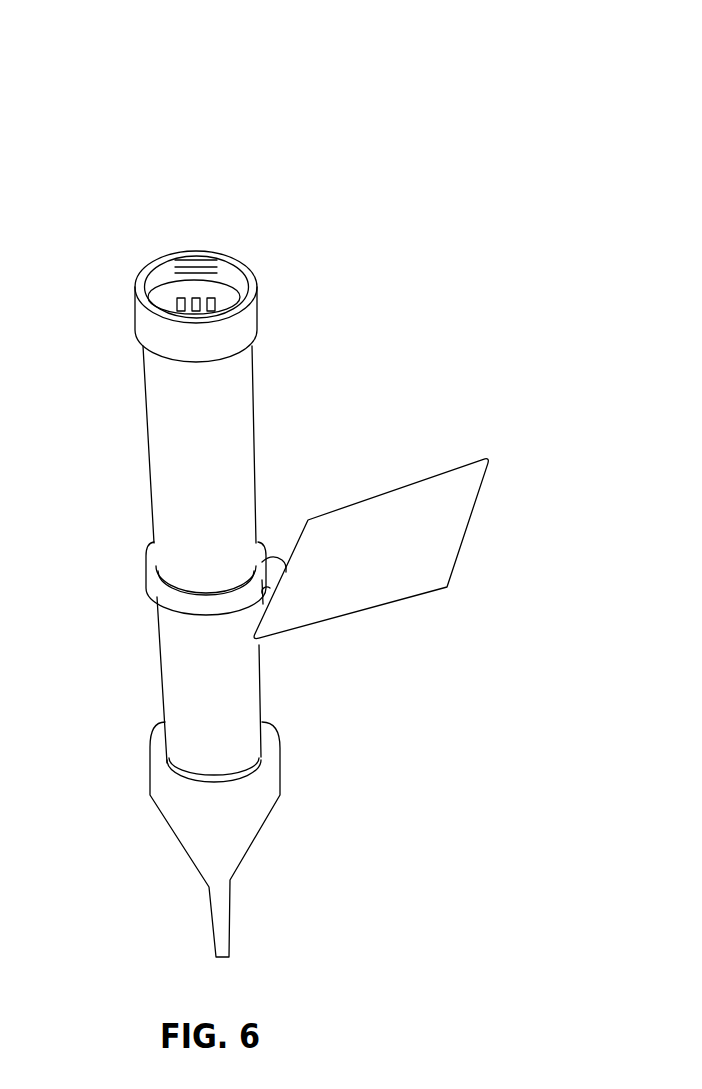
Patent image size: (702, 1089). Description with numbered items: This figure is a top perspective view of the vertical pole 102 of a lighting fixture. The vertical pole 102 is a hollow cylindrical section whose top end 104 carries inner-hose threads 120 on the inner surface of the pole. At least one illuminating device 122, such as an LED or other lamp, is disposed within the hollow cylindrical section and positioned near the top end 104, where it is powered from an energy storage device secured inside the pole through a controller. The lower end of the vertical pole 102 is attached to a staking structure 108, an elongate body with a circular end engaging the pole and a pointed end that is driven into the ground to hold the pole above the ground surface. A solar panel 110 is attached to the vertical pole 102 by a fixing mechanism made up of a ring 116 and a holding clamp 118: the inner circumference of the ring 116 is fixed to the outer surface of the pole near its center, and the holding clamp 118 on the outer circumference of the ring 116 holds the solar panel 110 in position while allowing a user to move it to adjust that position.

The vertical pole 102 is at (204, 72).
The top end 104 is at (240, 312).
The staking structure 108 is at (192, 860).
The solar panel 110 is at (463, 547).
The ring 116 is at (148, 580).
The holding clamp 118 is at (277, 557).
The inner-hose threads 120 is at (224, 256).
The illuminating device 122 is at (182, 217).